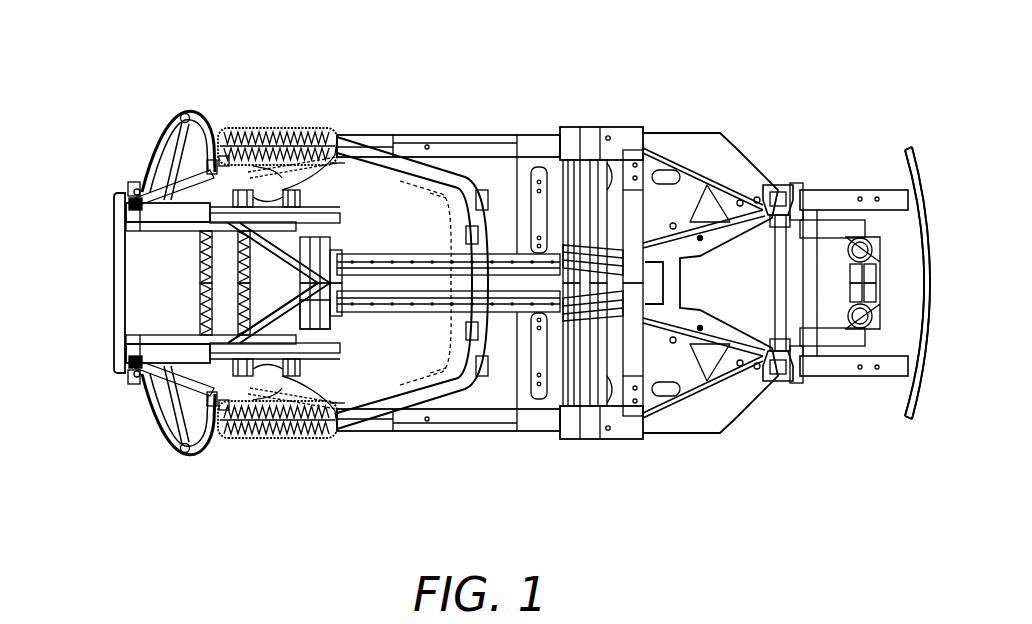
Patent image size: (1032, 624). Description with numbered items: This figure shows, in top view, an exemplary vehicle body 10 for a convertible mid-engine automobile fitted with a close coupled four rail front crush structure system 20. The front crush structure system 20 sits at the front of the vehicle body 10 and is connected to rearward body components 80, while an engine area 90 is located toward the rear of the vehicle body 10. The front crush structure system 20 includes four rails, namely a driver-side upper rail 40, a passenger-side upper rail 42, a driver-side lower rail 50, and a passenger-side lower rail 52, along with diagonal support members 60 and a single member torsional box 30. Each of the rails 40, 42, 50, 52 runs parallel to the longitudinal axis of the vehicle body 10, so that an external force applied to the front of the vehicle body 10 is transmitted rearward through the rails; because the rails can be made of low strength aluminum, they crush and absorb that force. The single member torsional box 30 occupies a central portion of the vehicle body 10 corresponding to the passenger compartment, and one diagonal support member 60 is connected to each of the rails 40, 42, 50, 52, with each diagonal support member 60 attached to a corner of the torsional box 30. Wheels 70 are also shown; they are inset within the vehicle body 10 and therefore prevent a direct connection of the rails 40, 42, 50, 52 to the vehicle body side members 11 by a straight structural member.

The vehicle body 10 is at (203, 66).
The vehicle body side members 11 is at (433, 133).
The front crush structure system 20 is at (318, 298).
The single member torsional box 30 is at (488, 280).
The driver-side upper rail 40 is at (170, 353).
The passenger-side upper rail 42 is at (167, 213).
The driver-side lower rail 50 is at (173, 344).
The passenger-side lower rail 52 is at (174, 222).
The diagonal support members 60 is at (270, 320).
The wheels 70 is at (277, 130).
The rearward body components 80 is at (628, 398).
The engine area 90 is at (703, 268).